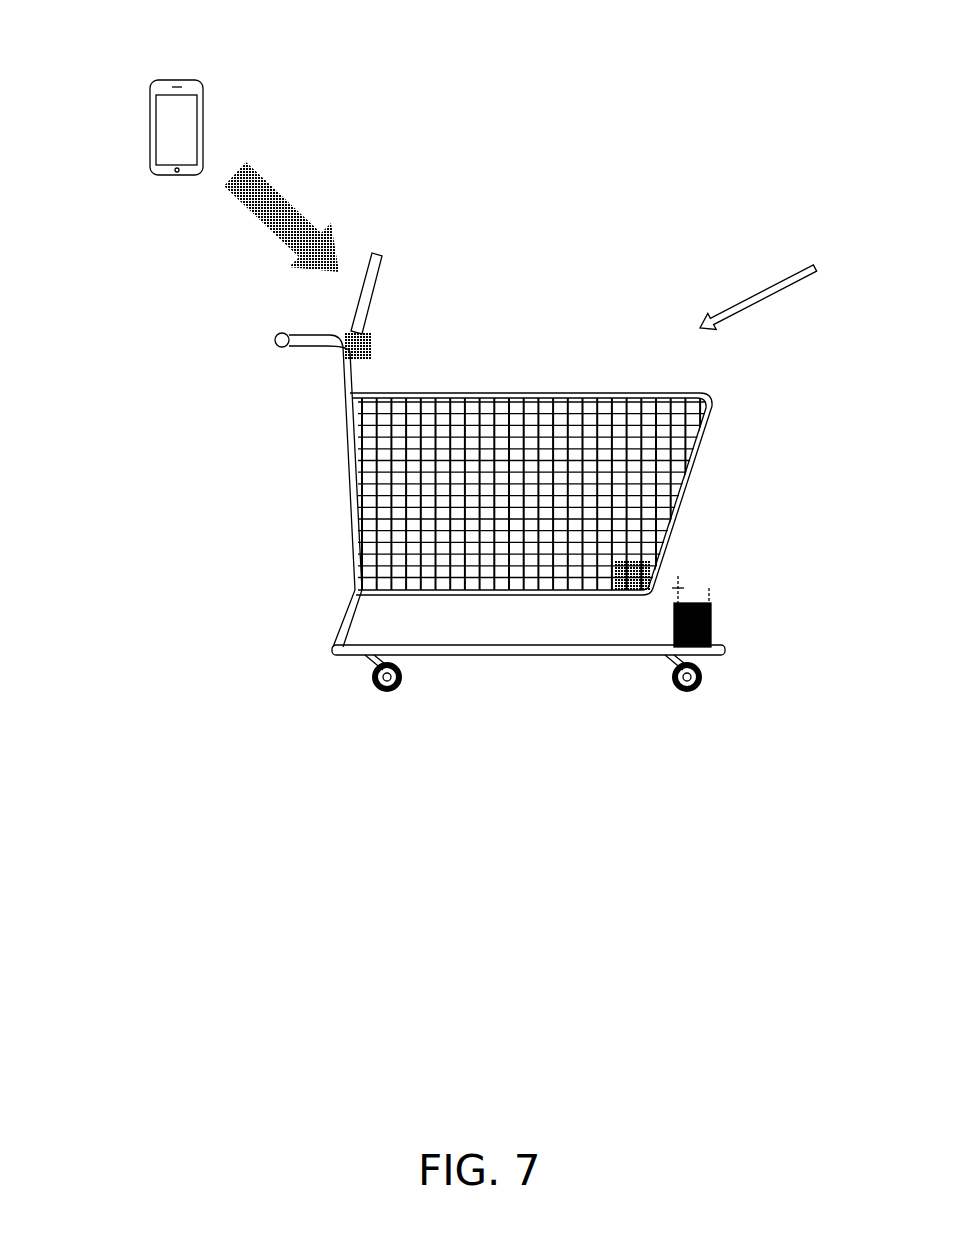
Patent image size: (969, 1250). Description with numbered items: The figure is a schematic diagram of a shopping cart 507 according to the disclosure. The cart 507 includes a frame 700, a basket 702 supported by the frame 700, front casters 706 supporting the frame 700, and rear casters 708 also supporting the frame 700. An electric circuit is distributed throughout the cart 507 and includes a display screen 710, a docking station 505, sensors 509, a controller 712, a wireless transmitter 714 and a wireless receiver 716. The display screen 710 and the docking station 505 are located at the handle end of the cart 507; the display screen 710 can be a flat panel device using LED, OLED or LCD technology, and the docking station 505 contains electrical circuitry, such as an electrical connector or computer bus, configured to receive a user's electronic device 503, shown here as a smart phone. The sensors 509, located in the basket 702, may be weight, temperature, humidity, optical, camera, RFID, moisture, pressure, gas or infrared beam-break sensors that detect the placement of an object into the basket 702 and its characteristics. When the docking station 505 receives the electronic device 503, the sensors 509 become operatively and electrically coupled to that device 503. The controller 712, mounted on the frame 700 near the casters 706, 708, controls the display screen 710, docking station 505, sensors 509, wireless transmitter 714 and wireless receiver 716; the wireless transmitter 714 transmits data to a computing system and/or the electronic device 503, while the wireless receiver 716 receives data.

The electronic device 503 is at (148, 125).
The docking station 505 is at (361, 334).
The cart 507 is at (869, 275).
The sensors 509 is at (657, 572).
The frame 700 is at (360, 585).
The basket 702 is at (619, 336).
The front casters 706 is at (702, 675).
The rear casters 708 is at (372, 673).
The display screen 710 is at (351, 330).
The controller 712 is at (712, 626).
The wireless transmitter 714 is at (679, 588).
The wireless receiver 716 is at (710, 588).